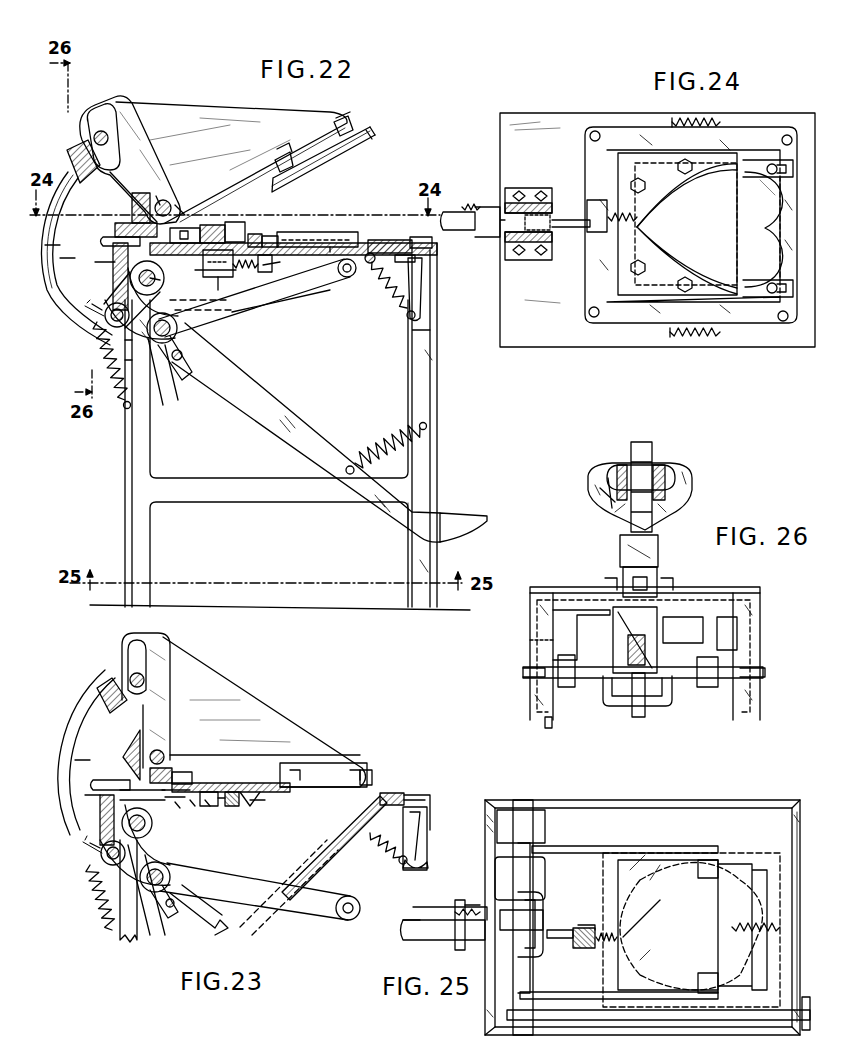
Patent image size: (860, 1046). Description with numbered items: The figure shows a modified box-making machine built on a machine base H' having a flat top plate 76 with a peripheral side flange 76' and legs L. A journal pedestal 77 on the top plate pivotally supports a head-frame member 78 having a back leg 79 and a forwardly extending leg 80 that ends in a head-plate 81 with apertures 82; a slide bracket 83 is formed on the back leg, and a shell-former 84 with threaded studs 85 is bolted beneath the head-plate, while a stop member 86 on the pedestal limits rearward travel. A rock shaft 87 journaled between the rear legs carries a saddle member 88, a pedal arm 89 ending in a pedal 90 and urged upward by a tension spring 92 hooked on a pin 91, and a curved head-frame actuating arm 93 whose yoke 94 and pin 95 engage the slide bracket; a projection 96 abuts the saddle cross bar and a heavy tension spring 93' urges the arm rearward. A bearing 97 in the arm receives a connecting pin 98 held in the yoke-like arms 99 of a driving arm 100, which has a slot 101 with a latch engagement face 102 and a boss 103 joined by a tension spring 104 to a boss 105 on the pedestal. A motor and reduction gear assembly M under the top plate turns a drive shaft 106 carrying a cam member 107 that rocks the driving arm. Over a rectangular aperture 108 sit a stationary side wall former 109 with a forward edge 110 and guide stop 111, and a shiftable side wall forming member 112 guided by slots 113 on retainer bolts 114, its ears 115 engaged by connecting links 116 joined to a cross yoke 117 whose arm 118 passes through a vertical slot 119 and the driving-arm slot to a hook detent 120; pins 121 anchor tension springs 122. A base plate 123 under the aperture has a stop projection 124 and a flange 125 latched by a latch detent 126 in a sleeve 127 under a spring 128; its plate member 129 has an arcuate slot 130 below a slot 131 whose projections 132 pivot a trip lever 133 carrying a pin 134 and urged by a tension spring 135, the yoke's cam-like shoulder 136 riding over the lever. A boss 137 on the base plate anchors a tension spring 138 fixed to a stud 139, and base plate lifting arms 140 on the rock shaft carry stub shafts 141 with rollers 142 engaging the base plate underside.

In FIG. 22, the top plate 76 is at (451, 423).
In FIG. 24, the top plate 76 is at (657, 239).
In FIG. 26, the top plate 76 is at (651, 640).
In FIG. 25, the top plate 76 is at (642, 909).
In FIG. 23, the top plate 76 is at (438, 791).
In FIG. 22, the peripheral side flange 76' is at (443, 431).
In FIG. 23, the peripheral side flange 76' is at (431, 835).
In FIG. 22, the journal pedestal 77 is at (200, 228).
In FIG. 24, the journal pedestal 77 is at (535, 190).
In FIG. 22, the head-frame member 78 is at (190, 105).
In FIG. 23, the head-frame member 78 is at (235, 700).
In FIG. 22, the back leg 79 is at (115, 100).
In FIG. 26, the back leg 79 is at (652, 445).
In FIG. 23, the back leg 79 is at (170, 668).
In FIG. 22, the forwardly extending leg 80 is at (255, 158).
In FIG. 23, the forwardly extending leg 80 is at (240, 753).
In FIG. 22, the head-plate 81 is at (352, 118).
In FIG. 26, the head-plate 81 is at (692, 475).
In FIG. 23, the head-plate 81 is at (372, 772).
In FIG. 22, the apertures 82 is at (288, 145).
In FIG. 22, the slide bracket 83 is at (95, 108).
In FIG. 26, the slide bracket 83 is at (630, 470).
In FIG. 23, the slide bracket 83 is at (124, 640).
In FIG. 22, the shell-former 84 is at (352, 146).
In FIG. 26, the shell-former 84 is at (692, 490).
In FIG. 23, the shell-former 84 is at (332, 763).
In FIG. 22, the threaded studs 85 is at (378, 132).
In FIG. 22, the stop member 86 is at (132, 196).
In FIG. 26, the stop member 86 is at (658, 540).
In FIG. 23, the stop member 86 is at (123, 752).
In FIG. 22, the rock shaft 87 is at (180, 332).
In FIG. 26, the rock shaft 87 is at (590, 680).
In FIG. 25, the rock shaft 87 is at (535, 882).
In FIG. 23, the rock shaft 87 is at (172, 879).
In FIG. 22, the saddle member 88 is at (178, 378).
In FIG. 26, the saddle member 88 is at (608, 705).
In FIG. 25, the saddle member 88 is at (540, 907).
In FIG. 23, the saddle member 88 is at (170, 918).
In FIG. 22, the pedal arm 89 is at (272, 385).
In FIG. 26, the pedal arm 89 is at (548, 728).
In FIG. 25, the pedal arm 89 is at (612, 1020).
In FIG. 23, the pedal arm 89 is at (215, 930).
In FIG. 22, the pedal 90 is at (466, 512).
In FIG. 25, the pedal 90 is at (806, 997).
In FIG. 22, the pin 91 is at (350, 465).
In FIG. 22, the tension spring 92 is at (382, 440).
In FIG. 22, the head-frame actuating arm 93 is at (269, 255).
In FIG. 25, the head-frame actuating arm 93 is at (444, 933).
In FIG. 23, the head-frame actuating arm 93 is at (230, 795).
In FIG. 22, the tension spring 93' is at (98, 365).
In FIG. 25, the tension spring 93' is at (469, 885).
In FIG. 23, the tension spring 93' is at (86, 897).
In FIG. 22, the yoke 94 is at (70, 150).
In FIG. 26, the yoke 94 is at (622, 500).
In FIG. 23, the yoke 94 is at (105, 684).
In FIG. 22, the pin 95 is at (112, 135).
In FIG. 23, the pin 95 is at (146, 682).
In FIG. 22, the projection 96 is at (155, 370).
In FIG. 26, the projection 96 is at (640, 718).
In FIG. 25, the projection 96 is at (544, 923).
In FIG. 23, the projection 96 is at (150, 938).
In FIG. 22, the bearing 97 is at (105, 318).
In FIG. 23, the bearing 97 is at (100, 852).
In FIG. 22, the connecting pin 98 is at (110, 322).
In FIG. 23, the connecting pin 98 is at (100, 860).
In FIG. 22, the yoke-like arms 99 is at (115, 275).
In FIG. 26, the yoke-like arms 99 is at (626, 645).
In FIG. 22, the driving arm 100 is at (112, 266).
In FIG. 26, the driving arm 100 is at (620, 627).
In FIG. 23, the driving arm 100 is at (98, 812).
In FIG. 22, the slot 101 is at (120, 251).
In FIG. 23, the slot 101 is at (110, 768).
In FIG. 22, the latch engagement face 102 is at (112, 263).
In FIG. 23, the latch engagement face 102 is at (95, 790).
In FIG. 22, the apertured boss 103 is at (128, 224).
In FIG. 22, the tension spring 104 is at (160, 210).
In FIG. 24, the tension spring 104 is at (512, 188).
In FIG. 22, the apertured boss 105 is at (178, 208).
In FIG. 22, the drive shaft 106 is at (150, 288).
In FIG. 23, the drive shaft 106 is at (137, 823).
In FIG. 22, the cam member 107 is at (162, 280).
In FIG. 23, the cam member 107 is at (130, 800).
In FIG. 22, the rectangular aperture 108 is at (280, 240).
In FIG. 23, the rectangular aperture 108 is at (252, 808).
In FIG. 22, the stationary side wall former 109 is at (255, 234).
In FIG. 24, the stationary side wall former 109 is at (655, 262).
In FIG. 23, the stationary side wall former 109 is at (240, 783).
In FIG. 22, the forward edge 110 is at (340, 232).
In FIG. 24, the forward edge 110 is at (668, 198).
In FIG. 22, the guide stop 111 is at (322, 232).
In FIG. 24, the guide stop 111 is at (700, 182).
In FIG. 22, the shiftable side wall forming member 112 is at (392, 240).
In FIG. 24, the shiftable side wall forming member 112 is at (760, 250).
In FIG. 23, the shiftable side wall forming member 112 is at (404, 796).
In FIG. 24, the slots 113 is at (790, 230).
In FIG. 24, the retainer bolts 114 is at (768, 176).
In FIG. 24, the ears 115 is at (789, 130).
In FIG. 22, the connecting links 116 is at (368, 236).
In FIG. 24, the connecting links 116 is at (745, 127).
In FIG. 22, the cross yoke 117 is at (232, 225).
In FIG. 24, the cross yoke 117 is at (596, 156).
In FIG. 23, the cross yoke 117 is at (192, 772).
In FIG. 22, the arm 118 is at (228, 230).
In FIG. 24, the arm 118 is at (560, 228).
In FIG. 23, the arm 118 is at (172, 768).
In FIG. 24, the vertical slot 119 is at (537, 260).
In FIG. 22, the hook detent 120 is at (104, 240).
In FIG. 26, the hook detent 120 is at (650, 578).
In FIG. 23, the hook detent 120 is at (92, 782).
In FIG. 24, the pins 121 is at (672, 122).
In FIG. 24, the tension spring 122 is at (716, 122).
In FIG. 22, the base plate 123 is at (303, 243).
In FIG. 25, the base plate 123 is at (672, 935).
In FIG. 23, the base plate 123 is at (330, 865).
In FIG. 22, the stop projection 124 is at (398, 290).
In FIG. 25, the stop projection 124 is at (740, 922).
In FIG. 23, the stop projection 124 is at (440, 796).
In FIG. 22, the flange 125 is at (318, 292).
In FIG. 25, the flange 125 is at (632, 935).
In FIG. 23, the flange 125 is at (292, 915).
In FIG. 22, the latch detent 126 is at (270, 272).
In FIG. 24, the latch detent 126 is at (661, 225).
In FIG. 25, the latch detent 126 is at (622, 945).
In FIG. 23, the latch detent 126 is at (262, 808).
In FIG. 22, the sleeve 127 is at (205, 279).
In FIG. 25, the sleeve 127 is at (585, 924).
In FIG. 23, the sleeve 127 is at (240, 815).
In FIG. 22, the spring 128 is at (262, 274).
In FIG. 25, the spring 128 is at (582, 950).
In FIG. 23, the spring 128 is at (235, 808).
In FIG. 22, the plate member 129 is at (200, 256).
In FIG. 25, the plate member 129 is at (560, 940).
In FIG. 22, the arcuate slot 130 is at (218, 290).
In FIG. 22, the slot 131 is at (186, 230).
In FIG. 23, the projections 132 is at (215, 808).
In FIG. 23, the trip lever 133 is at (210, 810).
In FIG. 23, the pin 134 is at (195, 810).
In FIG. 23, the tension spring 135 is at (180, 810).
In FIG. 22, the cam-like shoulder 136 is at (248, 234).
In FIG. 24, the cam-like shoulder 136 is at (590, 208).
In FIG. 23, the cam-like shoulder 136 is at (175, 800).
In FIG. 22, the apertured boss 137 is at (378, 272).
In FIG. 23, the apertured boss 137 is at (376, 846).
In FIG. 22, the tension spring 138 is at (408, 318).
In FIG. 23, the tension spring 138 is at (425, 832).
In FIG. 22, the stud 139 is at (415, 298).
In FIG. 23, the stud 139 is at (428, 850).
In FIG. 22, the base plate lifting arms 140 is at (300, 302).
In FIG. 26, the base plate lifting arms 140 is at (560, 630).
In FIG. 25, the base plate lifting arms 140 is at (645, 846).
In FIG. 23, the base plate lifting arms 140 is at (257, 885).
In FIG. 22, the stub shaft 141 is at (340, 275).
In FIG. 23, the stub shaft 141 is at (345, 920).
In FIG. 22, the roller 142 is at (345, 280).
In FIG. 25, the roller 142 is at (708, 878).
In FIG. 23, the roller 142 is at (360, 906).
In FIG. 22, the machine base H' is at (281, 455).
In FIG. 26, the machine base H' is at (665, 646).
In FIG. 23, the machine base H' is at (271, 905).
In FIG. 22, the legs L is at (125, 456).
In FIG. 26, the legs L is at (530, 702).
In FIG. 25, the legs L is at (500, 800).
In FIG. 26, the driving motor and reduction gear assembly M is at (725, 630).
In FIG. 25, the driving motor and reduction gear assembly M is at (530, 870).